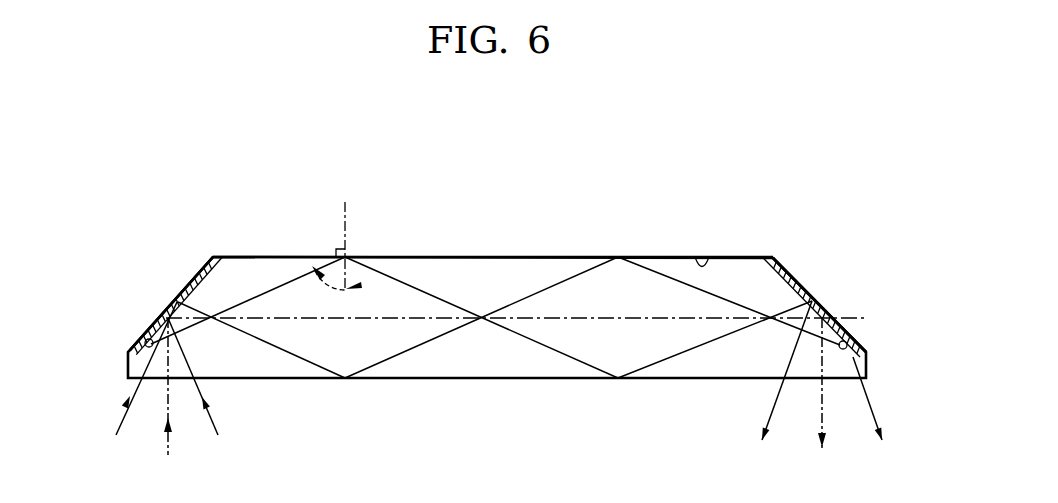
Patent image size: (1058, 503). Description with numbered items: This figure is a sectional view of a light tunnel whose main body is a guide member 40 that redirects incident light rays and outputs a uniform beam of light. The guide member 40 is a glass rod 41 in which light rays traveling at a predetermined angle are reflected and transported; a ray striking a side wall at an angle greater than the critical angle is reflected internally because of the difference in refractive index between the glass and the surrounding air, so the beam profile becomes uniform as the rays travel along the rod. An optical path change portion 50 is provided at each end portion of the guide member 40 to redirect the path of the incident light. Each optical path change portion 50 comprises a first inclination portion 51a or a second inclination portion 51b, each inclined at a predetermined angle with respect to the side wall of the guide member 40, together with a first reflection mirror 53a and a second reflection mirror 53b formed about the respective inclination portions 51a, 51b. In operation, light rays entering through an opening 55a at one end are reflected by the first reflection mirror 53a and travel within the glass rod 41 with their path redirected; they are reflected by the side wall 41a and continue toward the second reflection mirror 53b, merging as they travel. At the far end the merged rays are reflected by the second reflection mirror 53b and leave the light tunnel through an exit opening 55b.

The guide member 40 is at (537, 242).
The glass rod 41 is at (407, 257).
The side wall 41a is at (710, 259).
The optical path change portion 50 is at (212, 247).
The first inclination portion 51a is at (137, 343).
The second inclination portion 51b is at (858, 345).
The first reflection mirror 53a is at (178, 302).
The second reflection mirror 53b is at (815, 302).
The opening 55a is at (152, 380).
The exit opening 55b is at (842, 380).